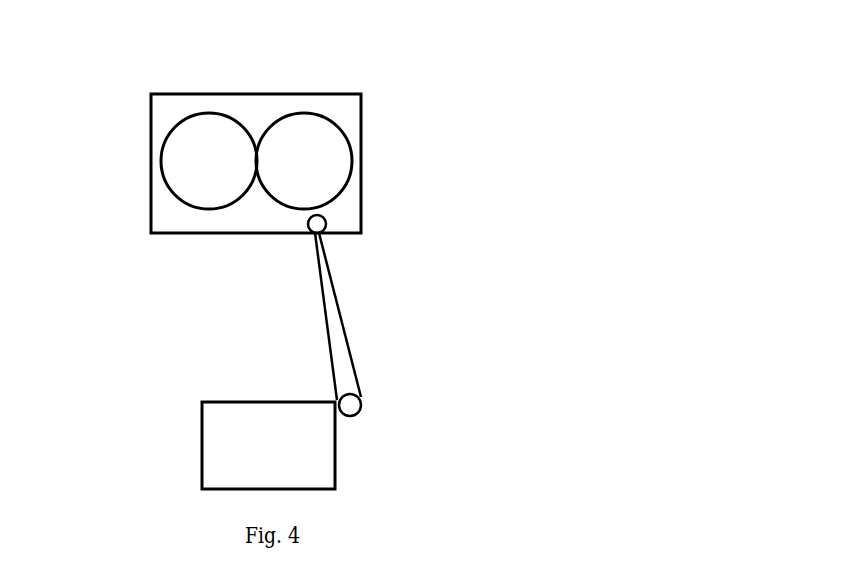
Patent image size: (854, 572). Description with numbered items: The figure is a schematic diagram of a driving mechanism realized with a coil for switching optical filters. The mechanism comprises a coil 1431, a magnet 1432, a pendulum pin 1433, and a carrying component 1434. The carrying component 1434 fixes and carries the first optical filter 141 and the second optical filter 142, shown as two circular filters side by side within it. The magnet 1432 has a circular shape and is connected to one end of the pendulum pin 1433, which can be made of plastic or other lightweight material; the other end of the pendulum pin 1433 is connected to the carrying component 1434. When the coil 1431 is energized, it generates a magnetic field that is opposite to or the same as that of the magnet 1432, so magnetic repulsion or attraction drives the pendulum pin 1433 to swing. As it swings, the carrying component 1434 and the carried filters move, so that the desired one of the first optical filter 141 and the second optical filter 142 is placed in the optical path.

The first optical filter 141 is at (303, 114).
The second optical filter 142 is at (187, 114).
The coil 1431 is at (268, 445).
The magnet 1432 is at (365, 405).
The pendulum pin 1433 is at (353, 355).
The carrying component 1434 is at (353, 198).